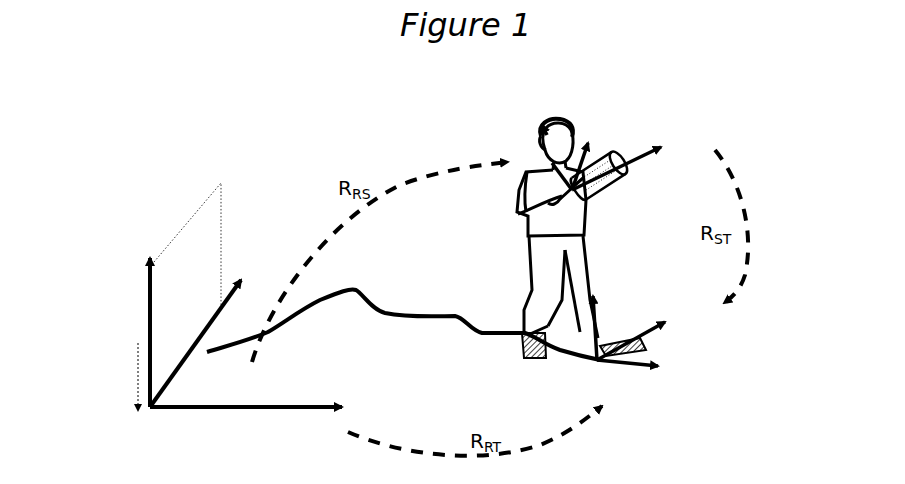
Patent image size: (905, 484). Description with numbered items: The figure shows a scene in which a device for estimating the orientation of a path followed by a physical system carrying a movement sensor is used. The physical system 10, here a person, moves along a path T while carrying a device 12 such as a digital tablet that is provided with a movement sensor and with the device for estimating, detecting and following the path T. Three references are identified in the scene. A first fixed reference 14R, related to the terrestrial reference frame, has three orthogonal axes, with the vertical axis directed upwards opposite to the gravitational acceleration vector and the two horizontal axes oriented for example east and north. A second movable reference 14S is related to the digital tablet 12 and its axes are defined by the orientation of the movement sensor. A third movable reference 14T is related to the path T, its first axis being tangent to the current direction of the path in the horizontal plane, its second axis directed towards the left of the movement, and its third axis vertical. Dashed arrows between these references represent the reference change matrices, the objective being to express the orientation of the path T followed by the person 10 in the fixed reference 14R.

The physical system 10 is at (506, 280).
The device 12 is at (612, 166).
The first fixed reference 14R is at (148, 315).
The second movable reference 14S is at (654, 155).
The third movable reference 14T is at (627, 367).
The path T is at (366, 298).